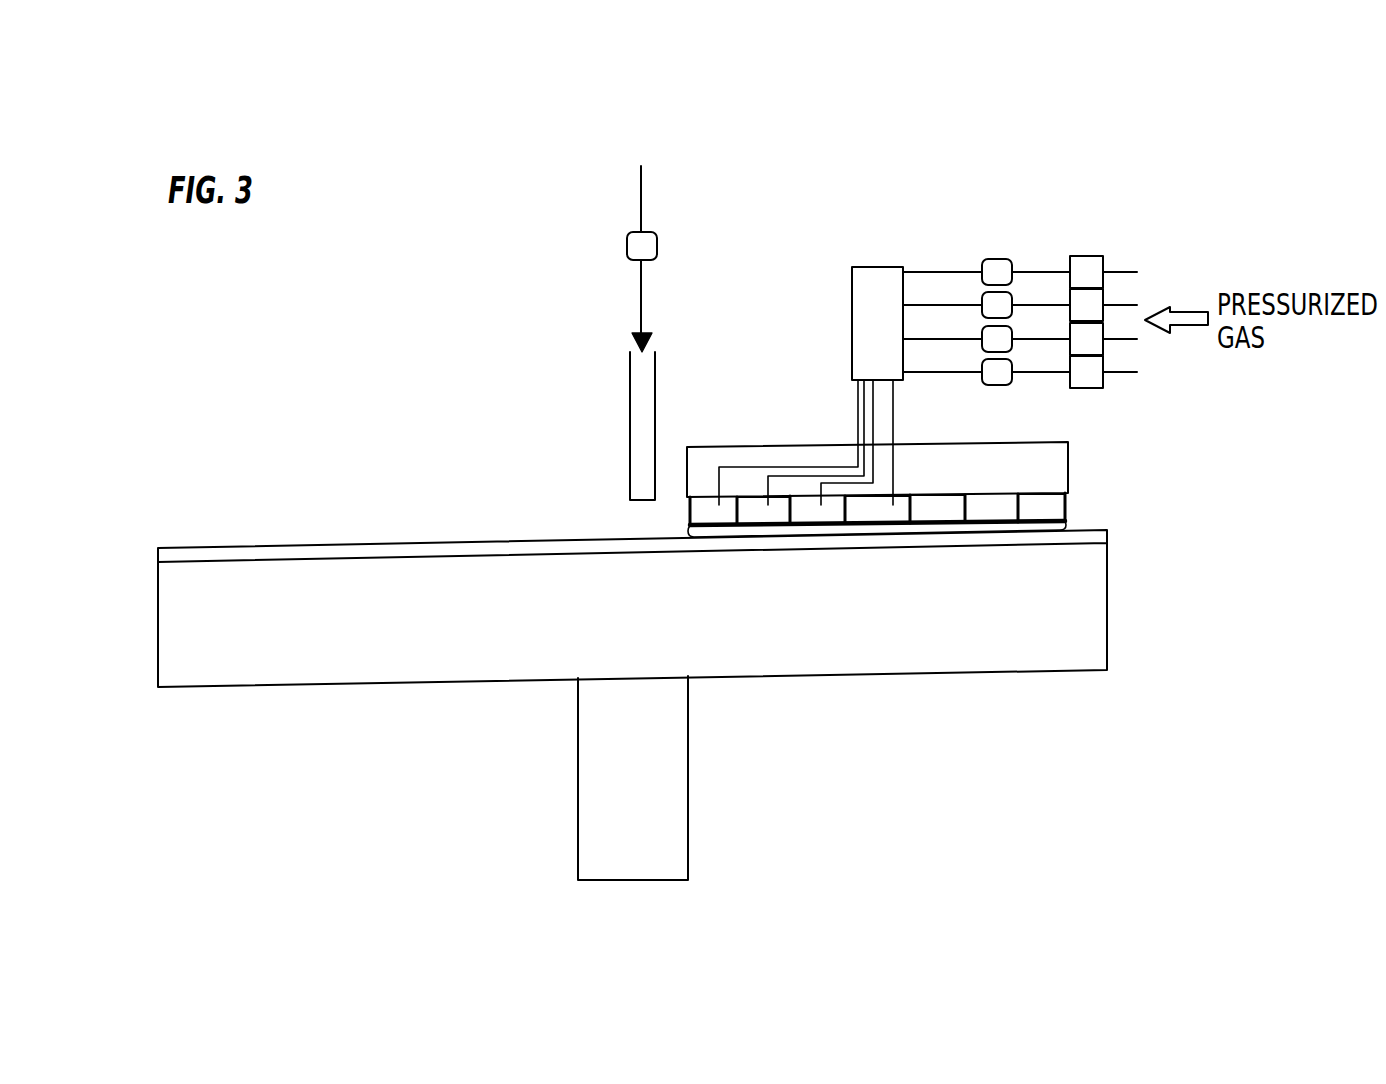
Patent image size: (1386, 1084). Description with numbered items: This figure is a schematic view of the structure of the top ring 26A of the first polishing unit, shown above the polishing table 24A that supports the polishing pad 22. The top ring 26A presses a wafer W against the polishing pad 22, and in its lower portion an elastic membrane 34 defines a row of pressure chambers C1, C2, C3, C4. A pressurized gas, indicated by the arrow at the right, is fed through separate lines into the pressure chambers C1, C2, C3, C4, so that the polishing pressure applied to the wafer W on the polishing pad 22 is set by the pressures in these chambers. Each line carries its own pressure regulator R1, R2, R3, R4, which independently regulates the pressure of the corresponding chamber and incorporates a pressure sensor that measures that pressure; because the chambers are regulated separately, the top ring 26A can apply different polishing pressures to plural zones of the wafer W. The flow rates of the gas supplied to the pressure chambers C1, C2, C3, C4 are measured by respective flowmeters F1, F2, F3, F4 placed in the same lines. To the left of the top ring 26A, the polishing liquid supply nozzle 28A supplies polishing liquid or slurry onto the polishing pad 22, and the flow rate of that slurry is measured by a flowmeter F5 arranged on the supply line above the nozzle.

The polishing pad 22 is at (408, 543).
The polishing table 24A is at (380, 683).
The top ring 26A is at (737, 447).
The polishing liquid supply nozzle 28A is at (630, 390).
The elastic membrane 34 is at (1065, 507).
The pressure chamber C1 is at (867, 512).
The pressure chamber C2 is at (948, 512).
The pressure chamber C3 is at (765, 512).
The pressure chamber C4 is at (1057, 512).
The wafer W is at (987, 535).
The flowmeter F1 is at (997, 272).
The flowmeter F2 is at (997, 305).
The flowmeter F3 is at (997, 339).
The flowmeter F4 is at (997, 372).
The flowmeter F5 is at (642, 259).
The pressure regulator R1 is at (1086, 272).
The pressure regulator R2 is at (1086, 305).
The pressure regulator R3 is at (1086, 339).
The pressure regulator R4 is at (1086, 372).